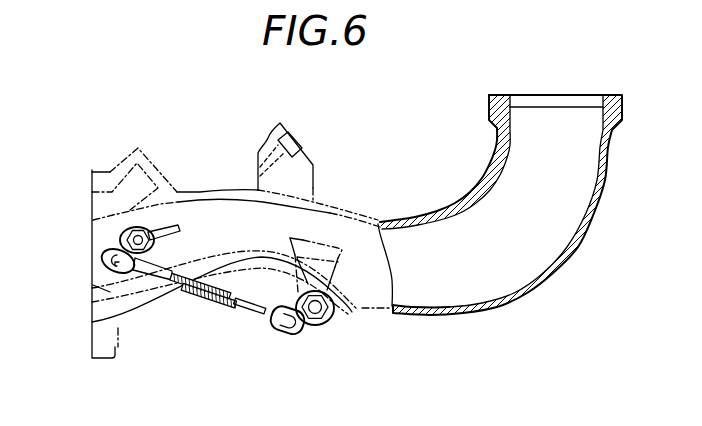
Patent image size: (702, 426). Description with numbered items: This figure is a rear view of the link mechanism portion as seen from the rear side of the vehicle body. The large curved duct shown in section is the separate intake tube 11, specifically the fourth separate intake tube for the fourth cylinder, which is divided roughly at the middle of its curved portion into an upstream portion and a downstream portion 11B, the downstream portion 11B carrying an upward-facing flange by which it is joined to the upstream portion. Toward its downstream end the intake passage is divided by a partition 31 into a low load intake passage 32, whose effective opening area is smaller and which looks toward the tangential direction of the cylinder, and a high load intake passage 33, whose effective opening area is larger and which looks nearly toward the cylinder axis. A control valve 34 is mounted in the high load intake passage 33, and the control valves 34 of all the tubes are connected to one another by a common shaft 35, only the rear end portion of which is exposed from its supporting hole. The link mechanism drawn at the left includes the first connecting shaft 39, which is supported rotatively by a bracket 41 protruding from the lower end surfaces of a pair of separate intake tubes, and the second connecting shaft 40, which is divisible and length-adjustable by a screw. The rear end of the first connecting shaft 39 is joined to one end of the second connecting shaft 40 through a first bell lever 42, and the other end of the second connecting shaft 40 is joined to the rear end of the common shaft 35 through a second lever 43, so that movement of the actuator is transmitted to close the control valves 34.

The separate intake tube 11 is at (545, 268).
The downstream portion 11B is at (448, 315).
The partition 31 is at (93, 284).
The low load intake passage 32 is at (128, 302).
The high load intake passage 33 is at (102, 229).
The control valve 34 is at (178, 230).
The common shaft 35 is at (140, 234).
The first connecting shaft 39 is at (330, 325).
The second connecting shaft 40 is at (207, 306).
The bracket 41 is at (350, 308).
The first bell lever 42 is at (306, 333).
The second lever 43 is at (125, 234).